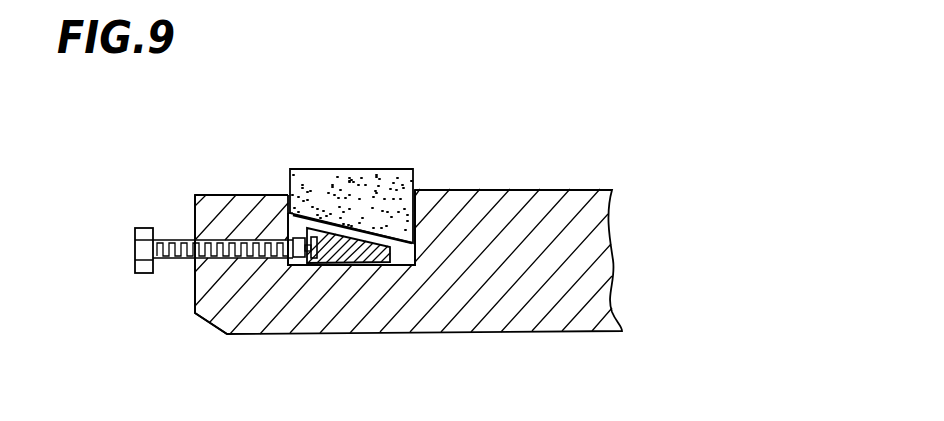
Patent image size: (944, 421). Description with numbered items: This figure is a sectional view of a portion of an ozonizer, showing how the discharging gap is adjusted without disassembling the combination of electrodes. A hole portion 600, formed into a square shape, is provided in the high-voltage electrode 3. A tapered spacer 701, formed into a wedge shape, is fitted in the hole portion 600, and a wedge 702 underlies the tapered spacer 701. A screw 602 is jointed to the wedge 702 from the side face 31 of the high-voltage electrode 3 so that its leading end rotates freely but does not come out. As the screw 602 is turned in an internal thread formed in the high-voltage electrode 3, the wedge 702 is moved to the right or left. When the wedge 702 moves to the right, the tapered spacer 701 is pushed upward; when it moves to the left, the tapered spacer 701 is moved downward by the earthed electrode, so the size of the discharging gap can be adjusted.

The high-voltage electrode 3 is at (564, 190).
The side face 31 is at (195, 290).
The hole portion 600 is at (416, 252).
The screw 602 is at (135, 274).
The tapered spacer 701 is at (393, 169).
The wedge 702 is at (340, 250).